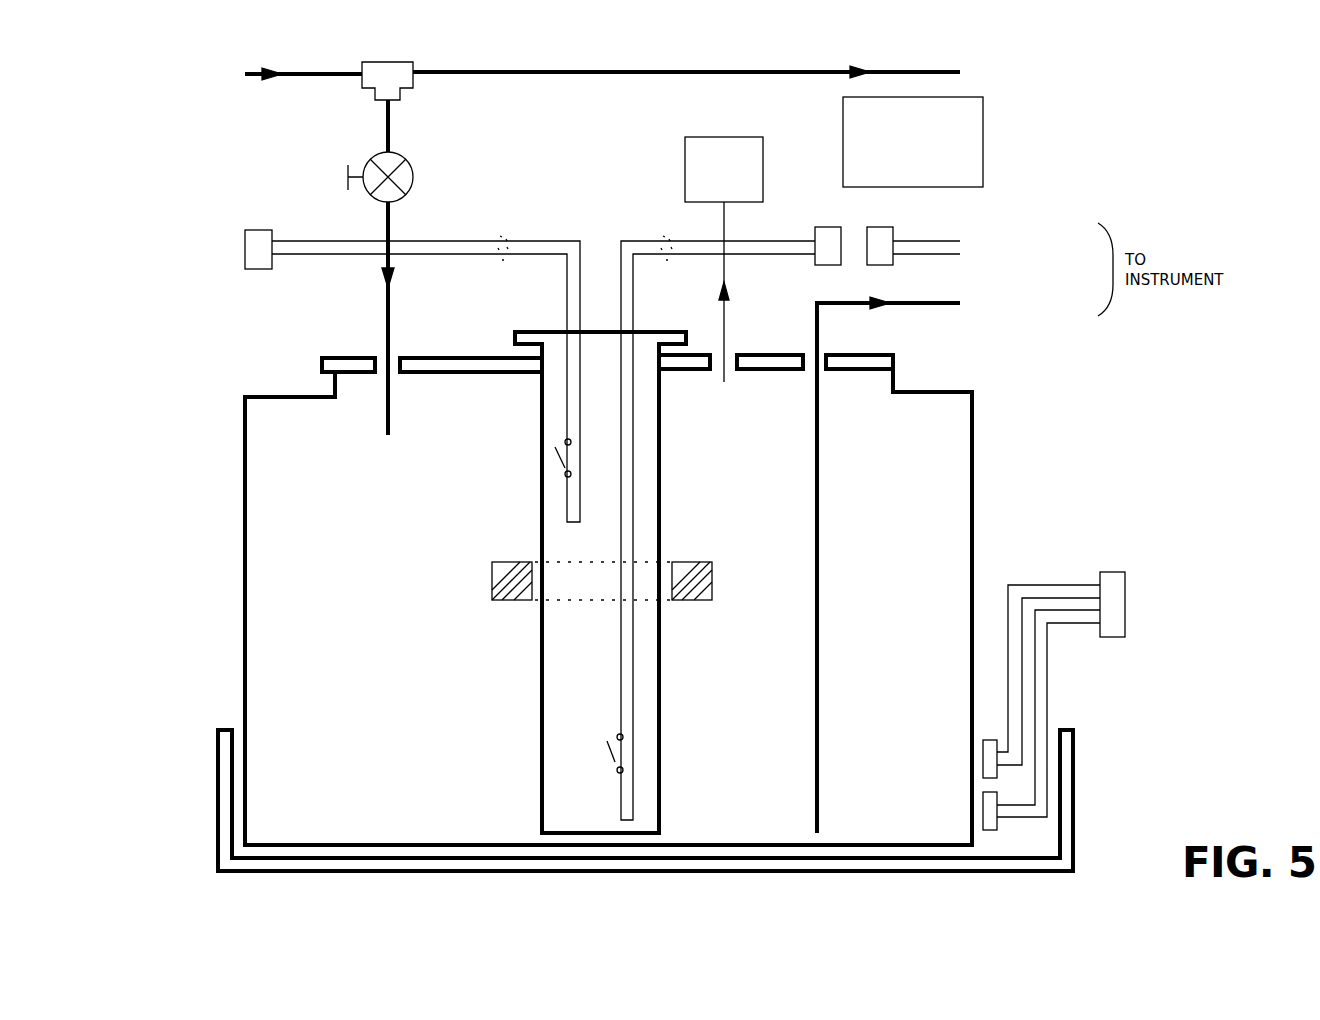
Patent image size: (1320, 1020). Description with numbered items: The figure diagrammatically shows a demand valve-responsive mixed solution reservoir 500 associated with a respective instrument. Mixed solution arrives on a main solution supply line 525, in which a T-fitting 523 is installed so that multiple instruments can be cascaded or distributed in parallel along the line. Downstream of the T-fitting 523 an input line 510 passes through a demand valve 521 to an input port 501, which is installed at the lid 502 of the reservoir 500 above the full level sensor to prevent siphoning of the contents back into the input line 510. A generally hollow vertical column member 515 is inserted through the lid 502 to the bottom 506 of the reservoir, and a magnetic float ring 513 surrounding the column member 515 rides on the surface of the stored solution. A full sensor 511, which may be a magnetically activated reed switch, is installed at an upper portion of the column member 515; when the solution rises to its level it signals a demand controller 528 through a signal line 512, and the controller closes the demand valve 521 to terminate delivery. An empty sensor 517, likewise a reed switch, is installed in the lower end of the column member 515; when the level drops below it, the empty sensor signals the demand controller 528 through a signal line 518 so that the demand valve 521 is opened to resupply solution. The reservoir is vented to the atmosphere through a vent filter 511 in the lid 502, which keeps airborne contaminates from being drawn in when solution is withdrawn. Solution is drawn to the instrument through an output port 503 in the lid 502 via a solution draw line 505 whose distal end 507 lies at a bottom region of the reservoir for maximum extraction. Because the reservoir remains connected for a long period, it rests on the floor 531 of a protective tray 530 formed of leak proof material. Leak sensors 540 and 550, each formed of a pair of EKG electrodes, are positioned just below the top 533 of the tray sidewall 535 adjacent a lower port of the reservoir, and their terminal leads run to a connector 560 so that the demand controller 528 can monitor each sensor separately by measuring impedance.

The mixed solution reservoir 500 is at (972, 440).
The input port 501 is at (383, 354).
The lid 502 is at (880, 354).
The output port 503 is at (815, 350).
The solution draw line 505 is at (817, 482).
The bottom of the reservoir 506 is at (426, 845).
The distal end of the solution draw line 507 is at (815, 832).
The input line 510 is at (385, 305).
The full level sensor 511 is at (730, 137).
The signal line 512 is at (505, 226).
The magnetic float ring 513 is at (492, 600).
The vertical column member 515 is at (542, 653).
The empty sensor 517 is at (605, 758).
The signal line 518 is at (672, 226).
The demand valve 521 is at (406, 184).
The T-fitting 523 is at (400, 62).
The main solution supply line 525 is at (313, 70).
The demand controller 528 is at (983, 133).
The protective tray 530 is at (1073, 850).
The floor of the tray 531 is at (743, 863).
The top of the tray sidewall 533 is at (1073, 727).
The tray sidewall 535 is at (1073, 788).
The leak sensor 540 is at (985, 805).
The leak sensor 550 is at (985, 755).
The connector 560 is at (1127, 615).